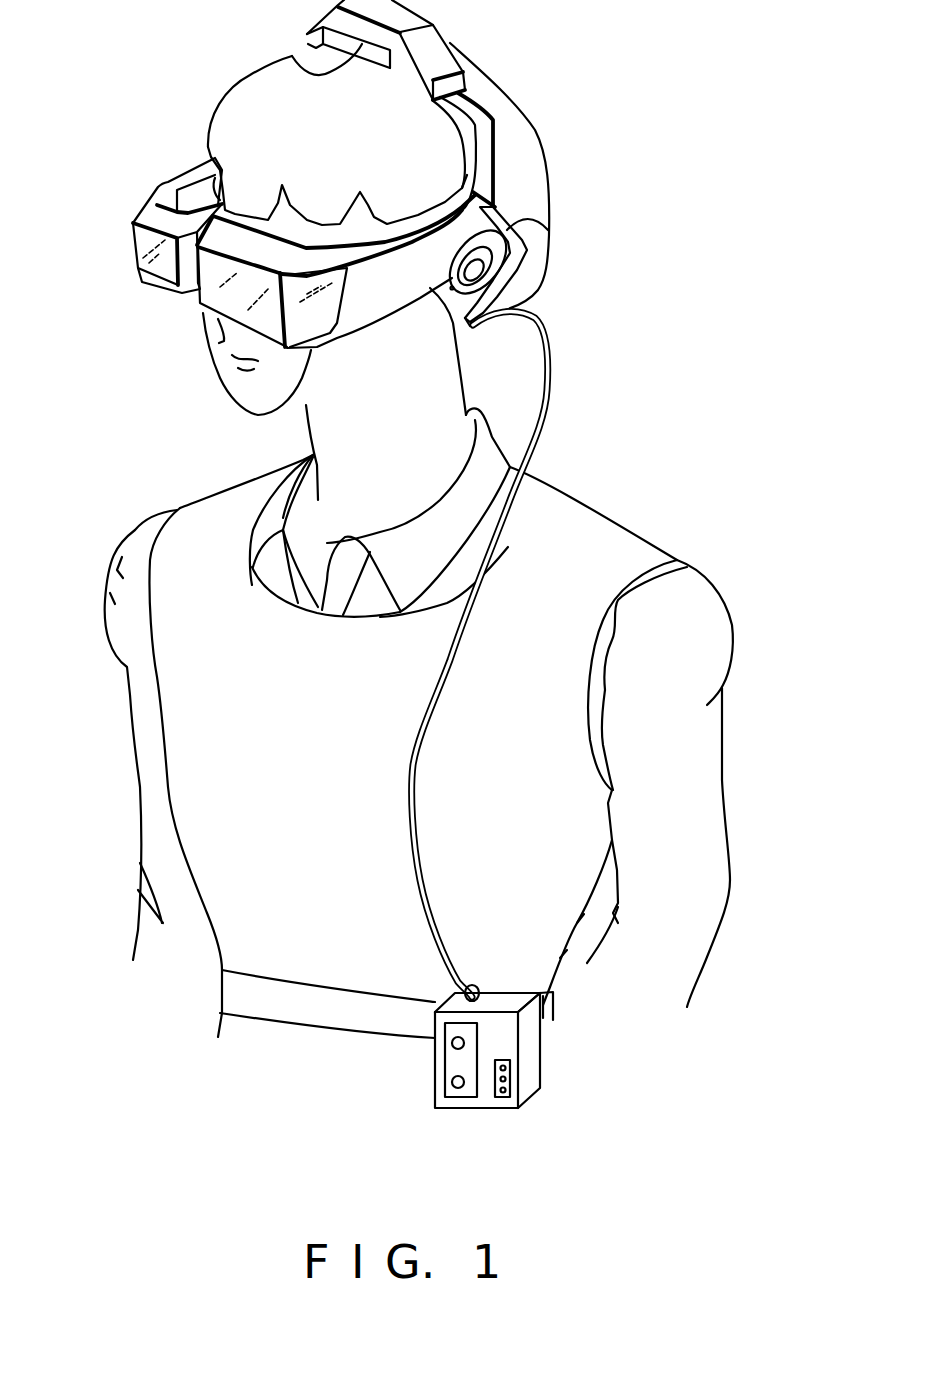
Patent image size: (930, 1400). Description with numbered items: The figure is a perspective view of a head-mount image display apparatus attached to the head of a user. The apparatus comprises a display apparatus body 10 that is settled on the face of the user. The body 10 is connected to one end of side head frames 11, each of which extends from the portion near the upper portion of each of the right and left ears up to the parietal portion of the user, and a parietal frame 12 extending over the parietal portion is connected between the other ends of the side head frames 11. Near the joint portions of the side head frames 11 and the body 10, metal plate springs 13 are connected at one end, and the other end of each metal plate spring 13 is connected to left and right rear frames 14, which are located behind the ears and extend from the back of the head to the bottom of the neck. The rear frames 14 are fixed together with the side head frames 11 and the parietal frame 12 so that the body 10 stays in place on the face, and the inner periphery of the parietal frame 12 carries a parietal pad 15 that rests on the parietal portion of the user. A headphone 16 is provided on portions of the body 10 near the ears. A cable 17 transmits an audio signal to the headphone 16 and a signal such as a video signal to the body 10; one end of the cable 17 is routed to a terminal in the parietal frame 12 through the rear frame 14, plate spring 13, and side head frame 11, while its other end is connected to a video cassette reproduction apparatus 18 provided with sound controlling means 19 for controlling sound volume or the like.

The display apparatus body 10 is at (312, 345).
The side head frame 11 is at (490, 153).
The parietal frame 12 is at (434, 43).
The metal plate spring 13 is at (510, 231).
The rear frame 14 is at (510, 276).
The parietal pad 15 is at (305, 66).
The headphone 16 is at (472, 300).
The cable 17 is at (549, 409).
The video cassette reproduction apparatus 18 is at (434, 1078).
The sound controlling means 19 is at (508, 1075).